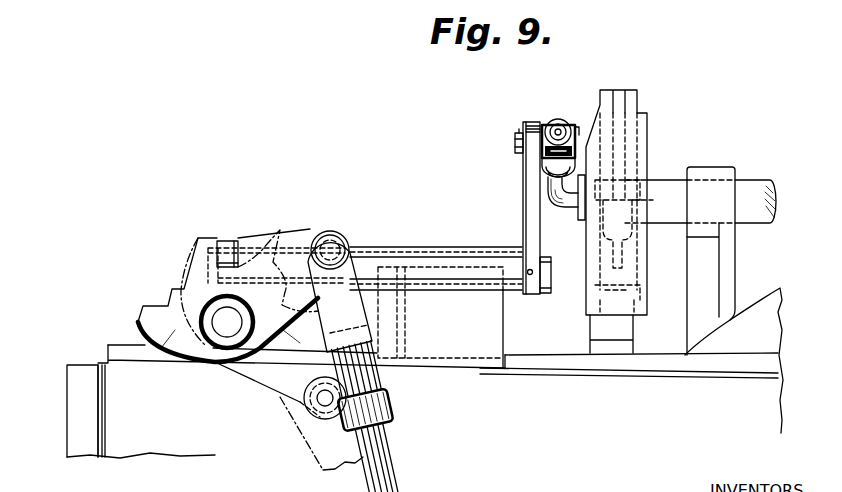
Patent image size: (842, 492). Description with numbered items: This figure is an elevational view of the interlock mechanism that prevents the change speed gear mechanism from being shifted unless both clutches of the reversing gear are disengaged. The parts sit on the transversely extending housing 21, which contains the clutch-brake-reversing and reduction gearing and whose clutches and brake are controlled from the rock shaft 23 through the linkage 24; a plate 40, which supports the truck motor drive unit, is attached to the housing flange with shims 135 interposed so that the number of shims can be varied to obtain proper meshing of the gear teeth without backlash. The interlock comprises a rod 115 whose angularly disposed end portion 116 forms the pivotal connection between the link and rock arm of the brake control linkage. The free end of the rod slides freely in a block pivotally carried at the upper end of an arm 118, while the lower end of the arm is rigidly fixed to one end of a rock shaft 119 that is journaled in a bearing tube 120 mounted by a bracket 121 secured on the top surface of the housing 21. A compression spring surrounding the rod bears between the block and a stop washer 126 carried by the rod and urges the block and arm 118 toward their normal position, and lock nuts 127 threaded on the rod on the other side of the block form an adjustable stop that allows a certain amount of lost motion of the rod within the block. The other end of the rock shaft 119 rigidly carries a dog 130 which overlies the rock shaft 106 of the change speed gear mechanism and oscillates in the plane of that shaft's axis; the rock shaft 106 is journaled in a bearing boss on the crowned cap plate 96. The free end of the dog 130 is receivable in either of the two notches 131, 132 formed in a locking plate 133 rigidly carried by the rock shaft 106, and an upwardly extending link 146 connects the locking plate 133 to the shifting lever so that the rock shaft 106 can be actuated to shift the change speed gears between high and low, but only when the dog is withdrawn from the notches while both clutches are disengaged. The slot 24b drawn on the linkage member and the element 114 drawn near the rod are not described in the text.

The housing 21 is at (440, 300).
The rock shaft 23 is at (753, 180).
The linkage 24 is at (644, 106).
The slot in guide column 24b is at (622, 250).
The plate 40 is at (78, 373).
The cap plate 96 is at (280, 353).
The rock shaft 106 is at (227, 340).
The wire 114 is at (576, 125).
The rod 115 is at (559, 127).
The angularly disposed end portion 116 is at (578, 205).
The arm 118 is at (528, 196).
The rock shaft 119 is at (545, 293).
The bearing tube 120 is at (426, 247).
The bracket 121 is at (440, 317).
The stop washer 126 is at (543, 171).
The lock nuts 127 is at (555, 125).
The dog 130 is at (226, 241).
The notch 131 is at (165, 303).
The notch 132 is at (268, 250).
The locking plate 133 is at (175, 330).
The shims 135 is at (104, 426).
The link 146 is at (396, 470).